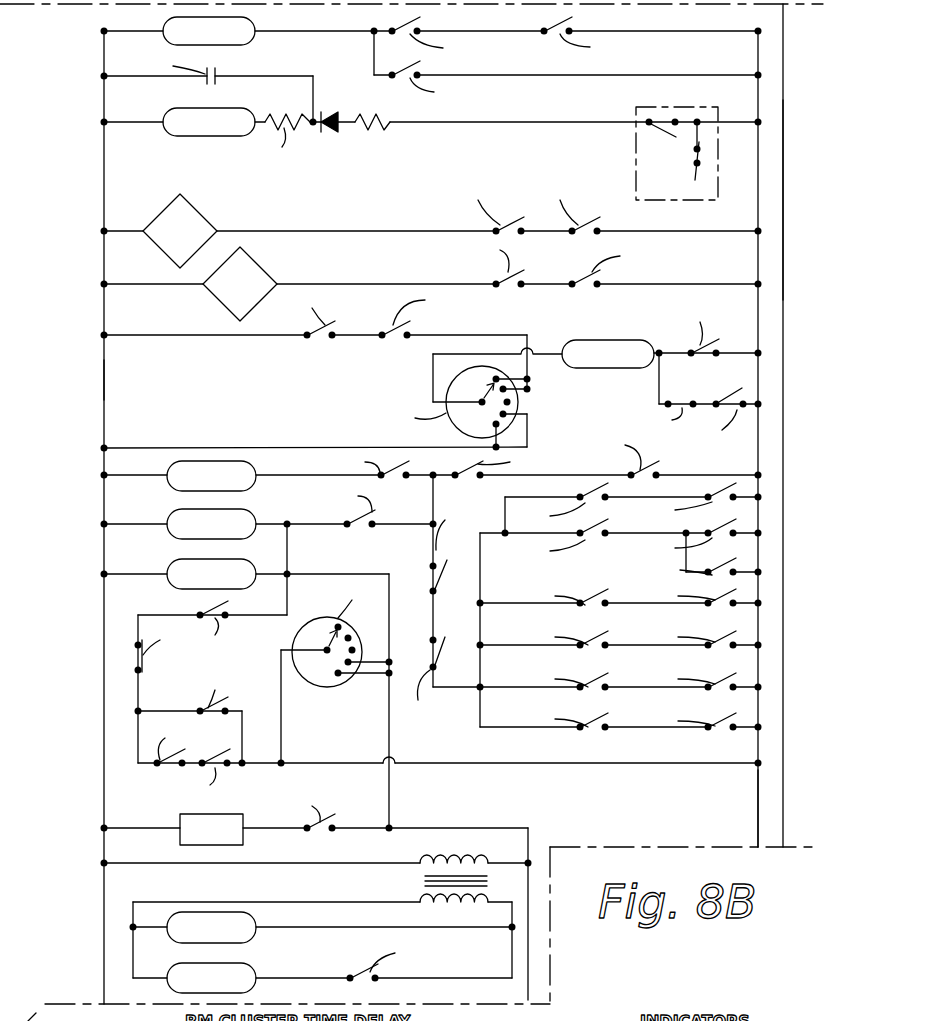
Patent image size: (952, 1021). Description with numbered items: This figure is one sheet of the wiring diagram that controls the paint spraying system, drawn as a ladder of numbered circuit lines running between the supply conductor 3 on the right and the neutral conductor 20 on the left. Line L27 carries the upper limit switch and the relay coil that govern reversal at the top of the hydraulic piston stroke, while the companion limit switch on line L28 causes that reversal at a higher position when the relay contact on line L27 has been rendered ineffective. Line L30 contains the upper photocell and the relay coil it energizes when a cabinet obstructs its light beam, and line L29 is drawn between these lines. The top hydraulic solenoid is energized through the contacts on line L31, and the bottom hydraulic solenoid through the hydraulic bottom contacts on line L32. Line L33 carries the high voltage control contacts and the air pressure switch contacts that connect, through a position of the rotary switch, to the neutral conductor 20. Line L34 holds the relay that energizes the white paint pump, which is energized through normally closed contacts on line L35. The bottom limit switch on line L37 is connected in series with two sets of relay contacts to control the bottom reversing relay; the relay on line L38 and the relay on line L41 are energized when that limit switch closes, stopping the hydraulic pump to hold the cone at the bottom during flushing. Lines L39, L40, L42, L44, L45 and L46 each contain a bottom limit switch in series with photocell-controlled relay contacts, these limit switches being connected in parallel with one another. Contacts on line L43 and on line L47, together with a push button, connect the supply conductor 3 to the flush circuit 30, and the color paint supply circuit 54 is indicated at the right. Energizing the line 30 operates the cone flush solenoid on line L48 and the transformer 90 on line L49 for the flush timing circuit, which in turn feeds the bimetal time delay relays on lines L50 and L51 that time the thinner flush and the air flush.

The circuit line L27 is at (117, 31).
The circuit line L28 is at (742, 74).
The line 29 L29 is at (117, 76).
The circuit line L30 is at (117, 122).
The circuit line L31 is at (117, 231).
The circuit line L32 is at (117, 284).
The circuit line L33 is at (117, 335).
The circuit line L34 is at (742, 352).
The circuit line L35 is at (760, 407).
The circuit line L37 is at (117, 475).
The circuit line L38 is at (117, 524).
The circuit line L39 is at (745, 497).
The circuit line L40 is at (745, 533).
The circuit line L41 is at (117, 574).
The circuit line L42 is at (745, 603).
The circuit line L43 is at (138, 615).
The circuit line L44 is at (745, 645).
The circuit line L45 is at (745, 687).
The circuit line L46 is at (745, 727).
The circuit line L47 is at (138, 765).
The circuit line L48 is at (117, 828).
The circuit line L49 is at (133, 902).
The circuit line L50 is at (133, 927).
The circuit line L51 is at (133, 978).
The neutral conductor 20 is at (104, 380).
The flush circuit 30 is at (516, 826).
The color paint supply circuit 54 is at (783, 176).
The transformer 90 is at (423, 880).
The supply conductor 3 is at (758, 793).